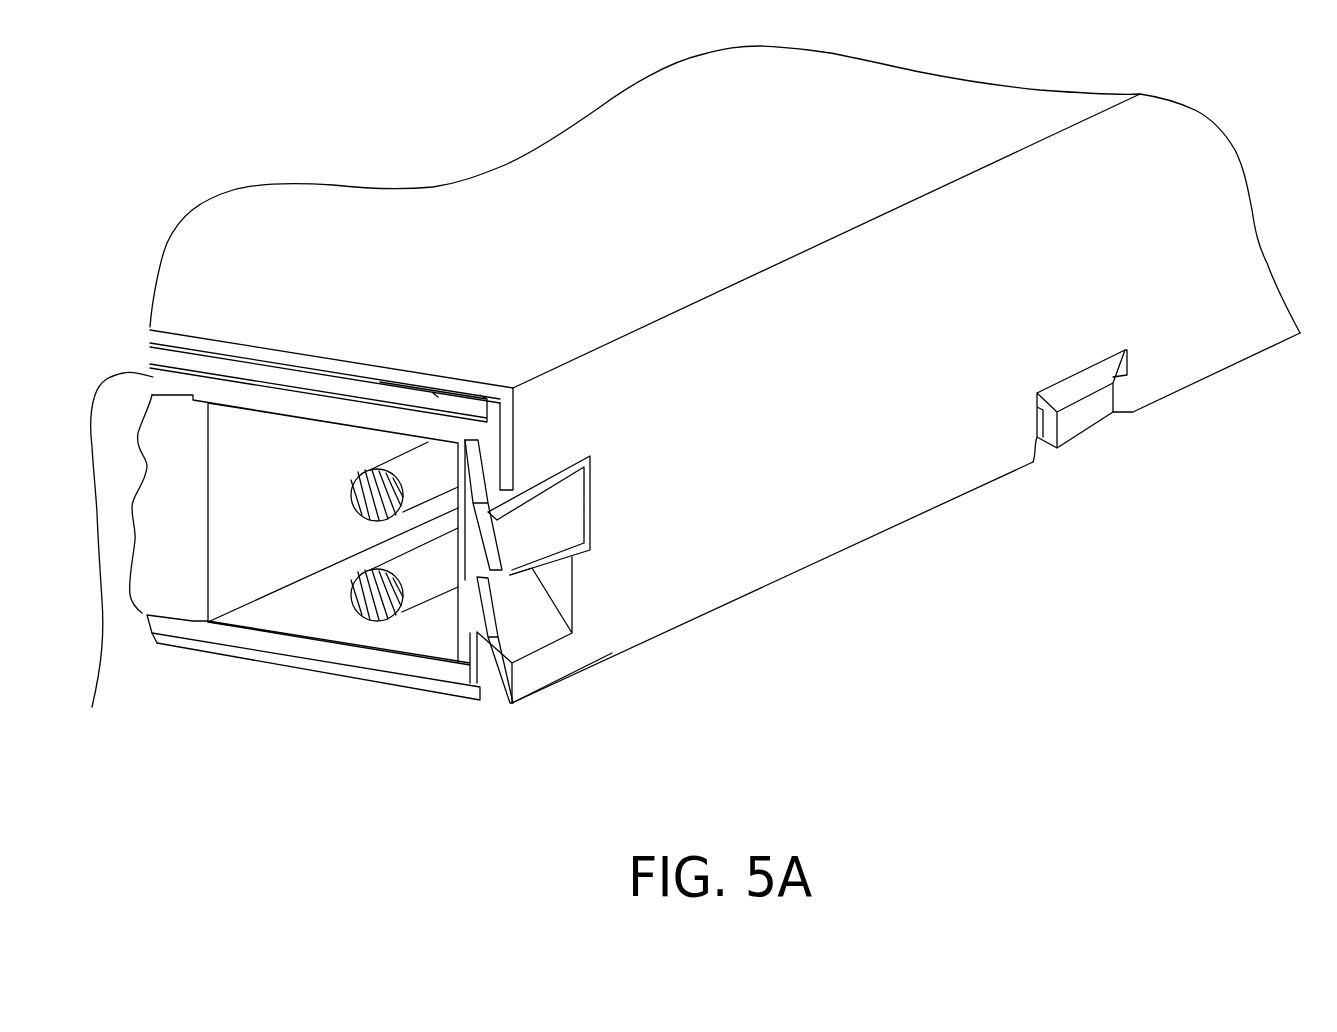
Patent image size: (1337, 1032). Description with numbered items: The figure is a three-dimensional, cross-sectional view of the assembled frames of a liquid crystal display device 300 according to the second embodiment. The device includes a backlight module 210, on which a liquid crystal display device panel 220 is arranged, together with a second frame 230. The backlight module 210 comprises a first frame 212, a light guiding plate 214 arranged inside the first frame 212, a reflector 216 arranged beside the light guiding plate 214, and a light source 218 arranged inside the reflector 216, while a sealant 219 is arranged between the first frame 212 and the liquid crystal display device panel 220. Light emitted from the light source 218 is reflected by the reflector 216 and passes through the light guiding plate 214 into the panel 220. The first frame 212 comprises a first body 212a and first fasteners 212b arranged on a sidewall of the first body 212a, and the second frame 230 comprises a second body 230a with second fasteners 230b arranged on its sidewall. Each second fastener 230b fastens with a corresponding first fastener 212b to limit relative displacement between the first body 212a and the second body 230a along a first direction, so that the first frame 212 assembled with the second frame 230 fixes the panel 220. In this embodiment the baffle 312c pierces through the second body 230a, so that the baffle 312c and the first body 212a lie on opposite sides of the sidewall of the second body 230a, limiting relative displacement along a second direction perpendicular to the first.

The liquid crystal display device 300 is at (1330, 763).
The liquid crystal display device panel 220 is at (157, 354).
The sealant 219 is at (112, 562).
The light guiding plate 214 is at (167, 602).
The reflector 216 is at (235, 633).
The light source 218 is at (373, 600).
The first frame 212 is at (387, 675).
The backlight module 210 is at (400, 755).
The second body 230a is at (498, 543).
The second fastener 230b is at (503, 633).
The second frame 230 is at (832, 648).
The first body 212a is at (495, 680).
The first fastener 212b is at (505, 530).
The baffle 312c is at (1068, 392).